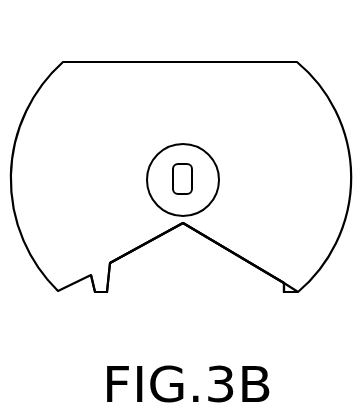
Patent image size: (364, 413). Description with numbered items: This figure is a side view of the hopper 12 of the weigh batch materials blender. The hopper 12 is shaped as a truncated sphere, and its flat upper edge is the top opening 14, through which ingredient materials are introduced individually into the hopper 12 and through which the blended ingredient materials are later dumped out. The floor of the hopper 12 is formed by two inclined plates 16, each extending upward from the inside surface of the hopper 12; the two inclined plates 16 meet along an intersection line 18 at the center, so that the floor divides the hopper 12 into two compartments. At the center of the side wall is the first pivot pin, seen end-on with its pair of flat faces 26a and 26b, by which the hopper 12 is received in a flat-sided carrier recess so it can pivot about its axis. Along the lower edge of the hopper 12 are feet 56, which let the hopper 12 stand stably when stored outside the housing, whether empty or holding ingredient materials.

The hopper 12 is at (320, 87).
The top opening 14 is at (181, 62).
The inclined plates 16 is at (142, 248).
The intersection line 18 is at (183, 226).
The flat face 26a is at (173, 180).
The flat face 26b is at (192, 175).
The feet 56 is at (96, 292).